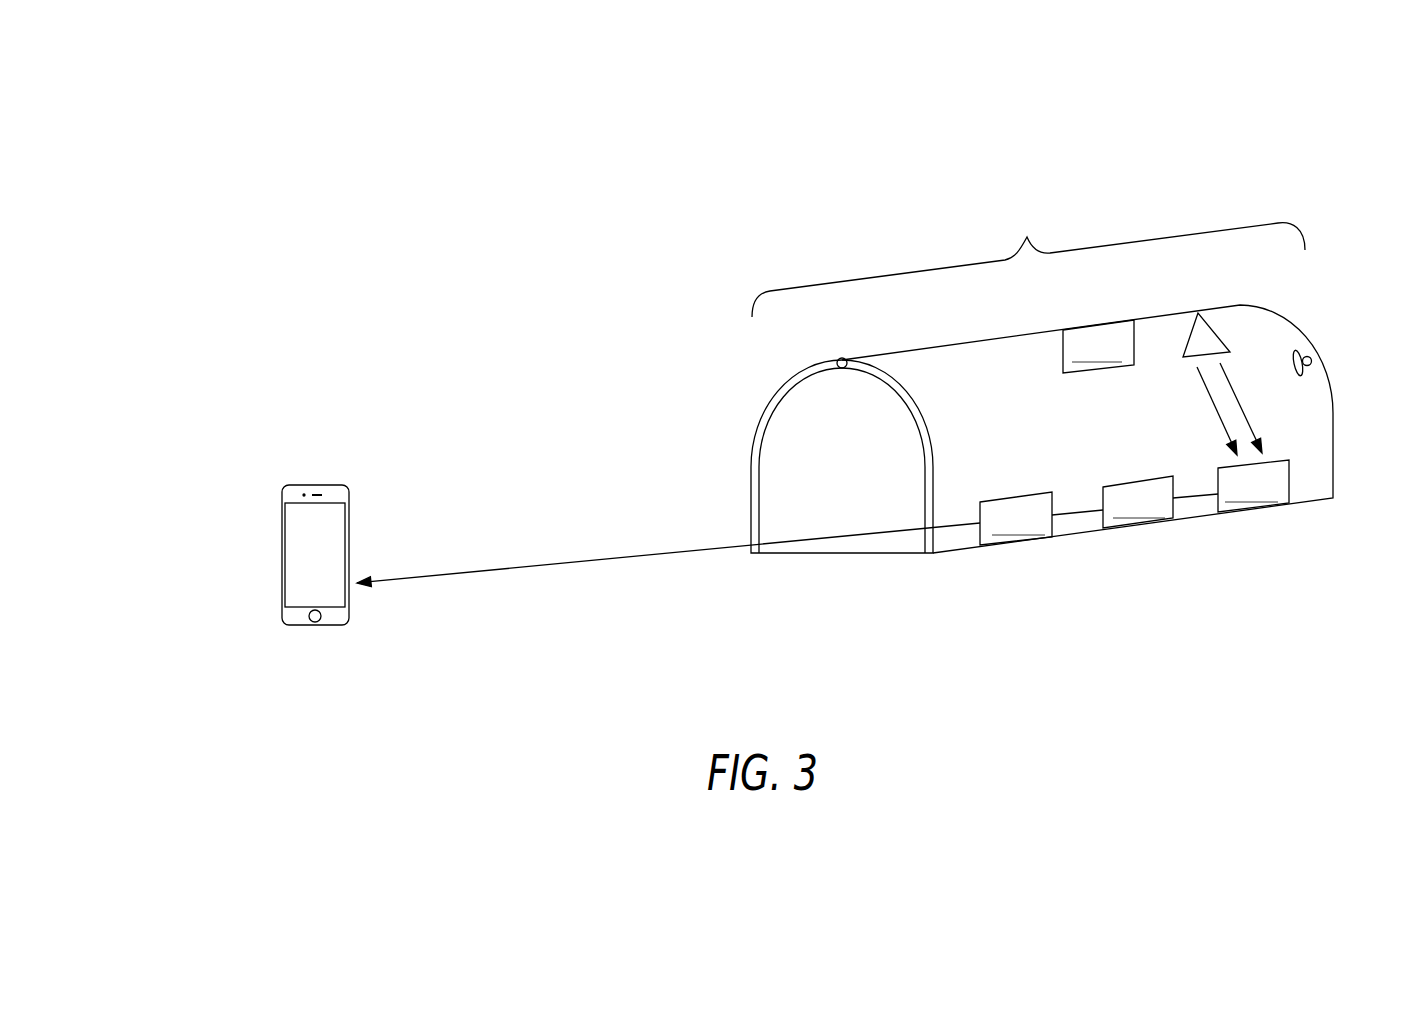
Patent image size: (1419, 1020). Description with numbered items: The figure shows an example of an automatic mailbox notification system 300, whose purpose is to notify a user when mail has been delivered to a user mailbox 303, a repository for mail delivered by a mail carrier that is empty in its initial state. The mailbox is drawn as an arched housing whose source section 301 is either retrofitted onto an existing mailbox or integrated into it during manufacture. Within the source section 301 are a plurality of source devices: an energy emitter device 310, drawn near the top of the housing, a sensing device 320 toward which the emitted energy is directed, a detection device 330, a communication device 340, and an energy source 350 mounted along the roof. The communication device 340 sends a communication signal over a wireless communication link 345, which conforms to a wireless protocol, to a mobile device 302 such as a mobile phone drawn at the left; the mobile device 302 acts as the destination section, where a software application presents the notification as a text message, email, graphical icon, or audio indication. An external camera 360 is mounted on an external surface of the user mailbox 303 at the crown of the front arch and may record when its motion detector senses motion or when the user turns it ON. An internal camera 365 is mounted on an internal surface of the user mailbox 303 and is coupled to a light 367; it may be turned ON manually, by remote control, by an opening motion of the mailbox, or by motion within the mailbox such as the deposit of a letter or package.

The automatic mailbox notification system 300 is at (614, 120).
The source section 301 is at (1028, 260).
The mobile device 302 is at (281, 503).
The user mailbox 303 is at (922, 341).
The energy emitter device 310 is at (1222, 333).
The sensing device 320 is at (1231, 486).
The detection device 330 is at (1112, 502).
The communication device 340 is at (1016, 518).
The wireless communication link 345 is at (608, 560).
The energy source 350 is at (1098, 346).
The external camera 360 is at (836, 362).
The internal camera 365 is at (1313, 357).
The light 367 is at (1302, 378).